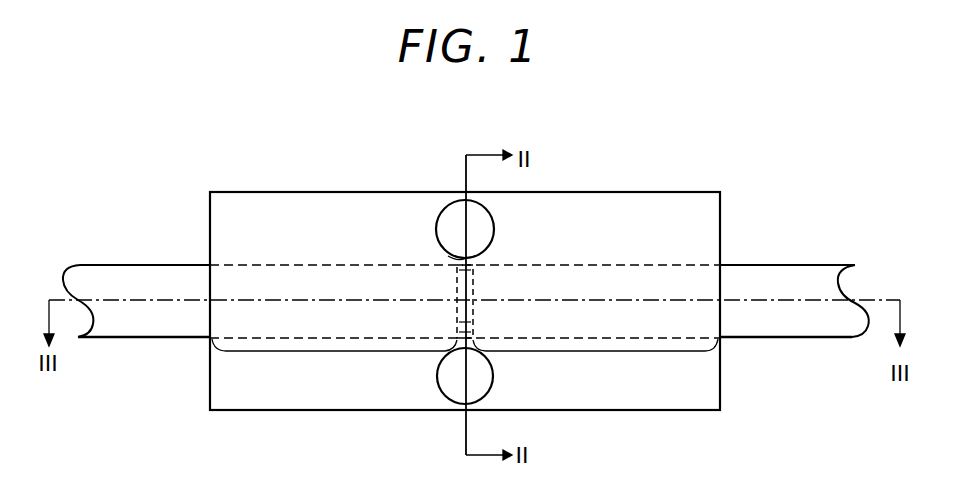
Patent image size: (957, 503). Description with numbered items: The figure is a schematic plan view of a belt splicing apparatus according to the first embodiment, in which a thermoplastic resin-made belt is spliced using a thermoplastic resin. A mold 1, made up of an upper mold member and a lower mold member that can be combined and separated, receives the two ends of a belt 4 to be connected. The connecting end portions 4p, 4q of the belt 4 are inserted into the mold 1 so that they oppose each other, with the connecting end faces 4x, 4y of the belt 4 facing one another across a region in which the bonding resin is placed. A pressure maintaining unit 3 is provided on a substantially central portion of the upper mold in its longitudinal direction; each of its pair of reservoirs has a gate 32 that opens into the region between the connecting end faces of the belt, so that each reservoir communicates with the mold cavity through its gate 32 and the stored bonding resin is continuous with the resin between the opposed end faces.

The mold 1 is at (673, 192).
The pressure maintaining unit 3 is at (487, 230).
The gate 32 is at (460, 258).
The belt 4 is at (157, 272).
The connecting end face 4x is at (457, 284).
The connecting end face 4y is at (473, 318).
The connecting end portion 4p is at (333, 352).
The connecting end portion 4q is at (595, 352).